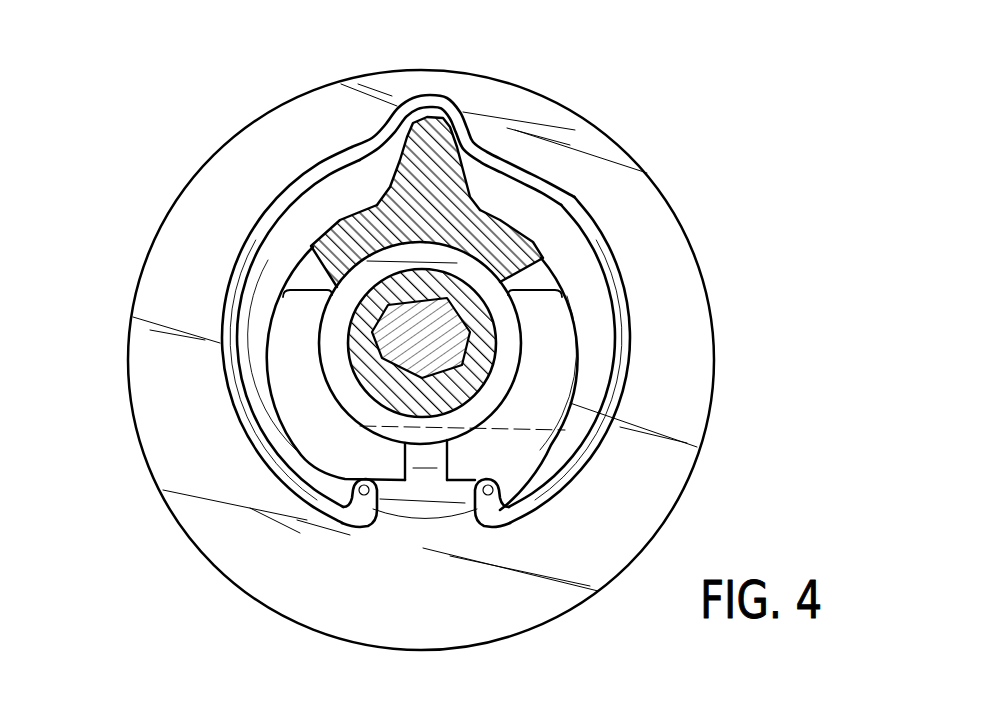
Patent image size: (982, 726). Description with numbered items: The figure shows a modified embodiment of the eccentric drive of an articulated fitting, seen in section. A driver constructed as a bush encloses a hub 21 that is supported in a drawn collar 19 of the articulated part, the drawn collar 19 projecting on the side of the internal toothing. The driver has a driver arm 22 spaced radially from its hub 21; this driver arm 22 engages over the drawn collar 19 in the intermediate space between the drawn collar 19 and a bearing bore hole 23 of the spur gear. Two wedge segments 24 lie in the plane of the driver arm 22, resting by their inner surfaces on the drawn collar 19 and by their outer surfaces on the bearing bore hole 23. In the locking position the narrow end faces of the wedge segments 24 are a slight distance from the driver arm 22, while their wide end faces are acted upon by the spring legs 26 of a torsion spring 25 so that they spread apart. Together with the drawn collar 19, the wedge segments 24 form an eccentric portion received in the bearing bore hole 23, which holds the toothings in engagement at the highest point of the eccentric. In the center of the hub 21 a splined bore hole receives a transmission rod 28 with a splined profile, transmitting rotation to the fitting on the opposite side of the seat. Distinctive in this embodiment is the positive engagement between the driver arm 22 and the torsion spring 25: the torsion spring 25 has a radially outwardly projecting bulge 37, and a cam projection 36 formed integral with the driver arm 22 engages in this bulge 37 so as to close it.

The drawn collar 19 is at (507, 330).
The hub 21 is at (385, 313).
The driver arm 22 is at (337, 225).
The bearing bore hole 23 is at (570, 278).
The wedge segments 24 is at (351, 462).
The torsion spring 25 is at (590, 228).
The spring legs 26 is at (478, 512).
The transmission rod 28 is at (418, 353).
The cam projection 36 is at (425, 148).
The bulge 37 is at (431, 106).